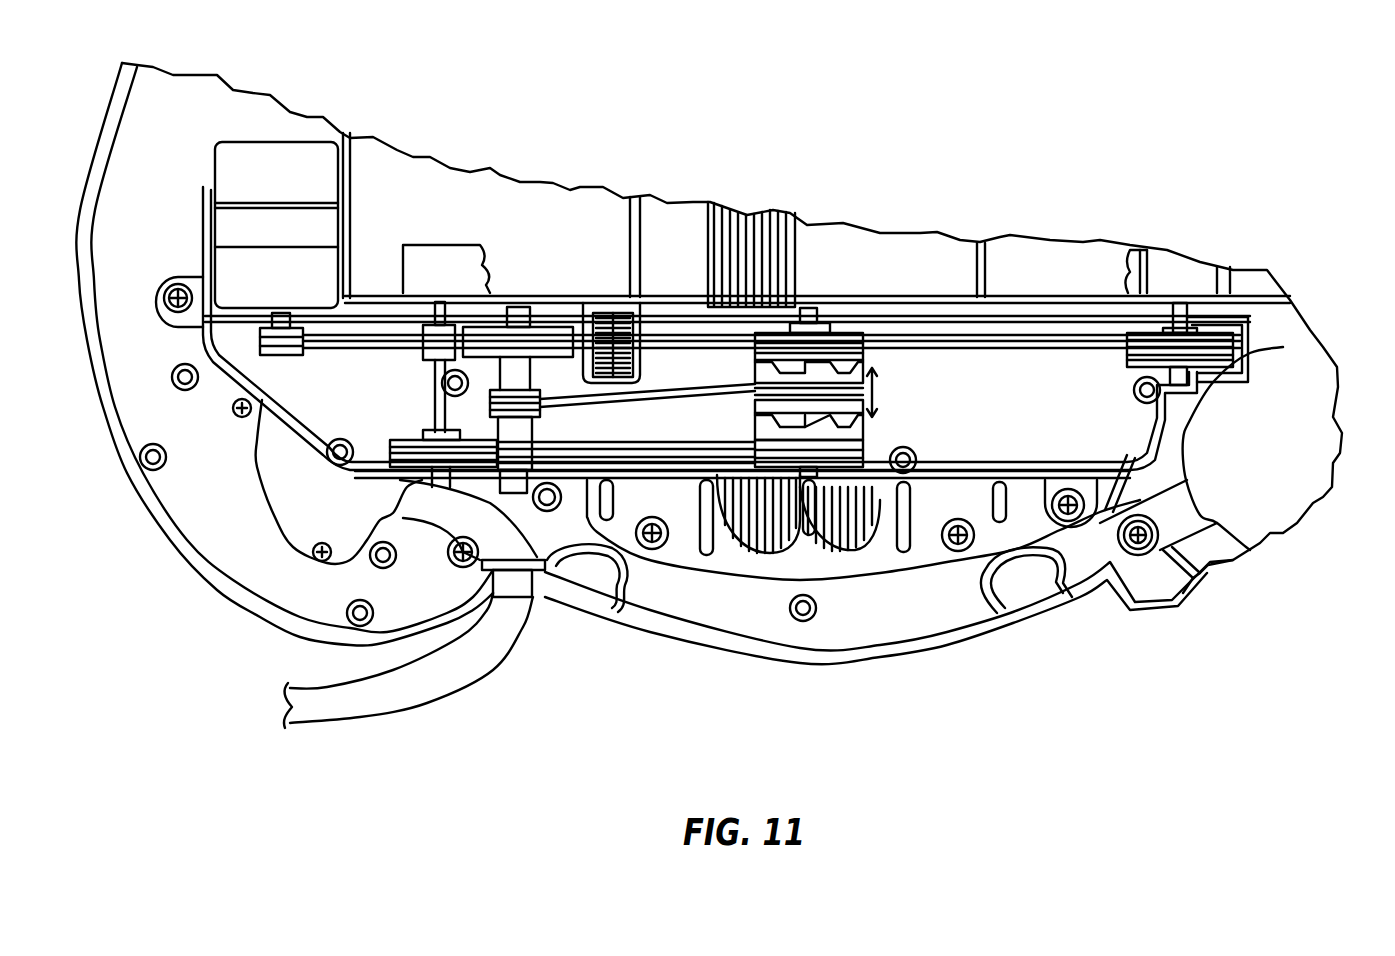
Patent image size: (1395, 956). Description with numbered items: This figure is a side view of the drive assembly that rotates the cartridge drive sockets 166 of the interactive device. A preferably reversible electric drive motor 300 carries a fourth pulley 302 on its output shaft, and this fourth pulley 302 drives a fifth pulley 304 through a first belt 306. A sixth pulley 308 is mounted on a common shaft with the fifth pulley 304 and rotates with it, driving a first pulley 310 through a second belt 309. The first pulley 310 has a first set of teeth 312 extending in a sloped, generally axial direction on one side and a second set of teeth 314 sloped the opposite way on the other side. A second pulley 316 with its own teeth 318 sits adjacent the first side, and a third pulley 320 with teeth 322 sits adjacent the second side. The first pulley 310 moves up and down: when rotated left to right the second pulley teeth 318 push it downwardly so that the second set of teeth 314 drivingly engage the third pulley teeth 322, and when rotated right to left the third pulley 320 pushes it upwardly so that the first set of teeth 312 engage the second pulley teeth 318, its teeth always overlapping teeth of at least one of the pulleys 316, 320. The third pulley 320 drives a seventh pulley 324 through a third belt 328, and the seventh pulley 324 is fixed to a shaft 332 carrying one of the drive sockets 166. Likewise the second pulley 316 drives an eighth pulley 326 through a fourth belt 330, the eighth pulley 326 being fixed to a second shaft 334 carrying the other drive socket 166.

The drive motor 300 is at (303, 188).
The fourth pulley 302 is at (267, 312).
The fifth pulley 304 is at (543, 327).
The first belt 306 is at (357, 332).
The sixth pulley 308 is at (533, 490).
The second belt 309 is at (587, 402).
The first pulley 310 is at (757, 385).
The first set of teeth 312 is at (757, 375).
The second set of teeth 314 is at (773, 413).
The second pulley 316 is at (880, 367).
The second pulley teeth 318 is at (787, 370).
The third pulley 320 is at (917, 457).
The third pulley teeth 322 is at (837, 430).
The seventh pulley 324 is at (397, 487).
The eighth pulley 326 is at (1233, 337).
The third belt 328 is at (677, 462).
The fourth belt 330 is at (1010, 343).
The shaft 332 is at (433, 413).
The second shaft 334 is at (1187, 310).
The drive sockets 166 is at (447, 253).